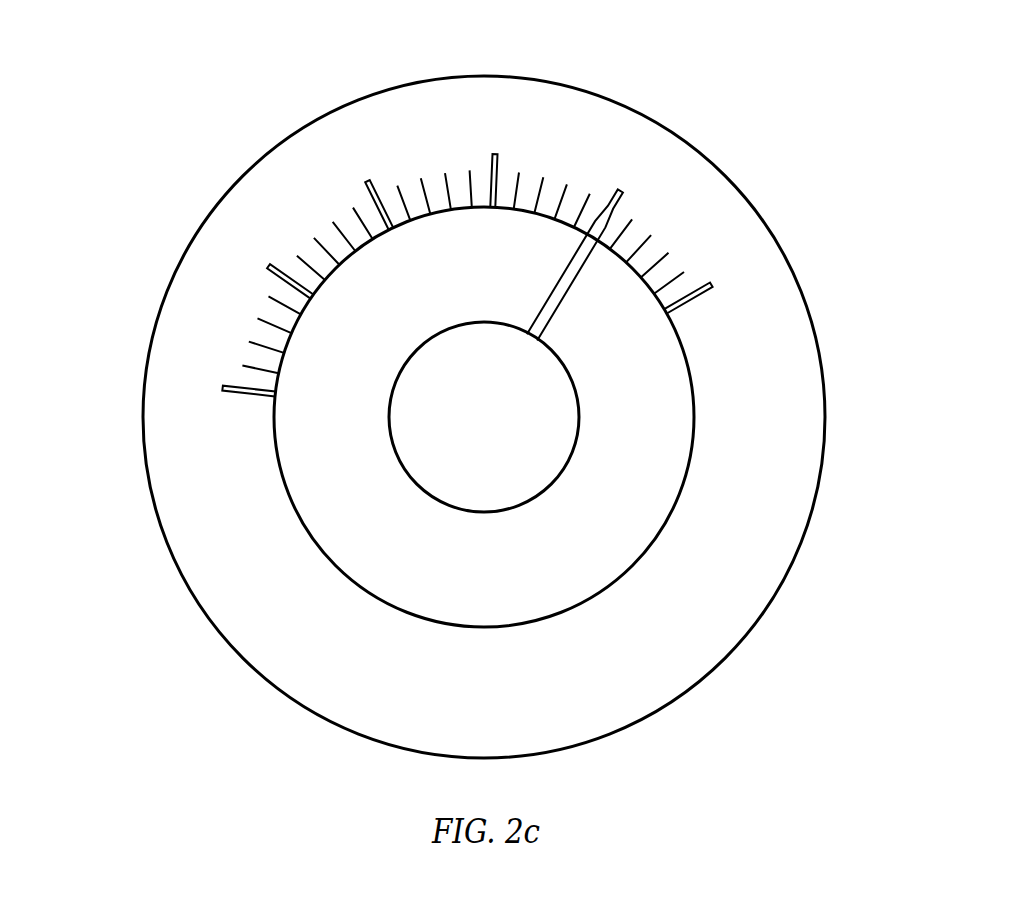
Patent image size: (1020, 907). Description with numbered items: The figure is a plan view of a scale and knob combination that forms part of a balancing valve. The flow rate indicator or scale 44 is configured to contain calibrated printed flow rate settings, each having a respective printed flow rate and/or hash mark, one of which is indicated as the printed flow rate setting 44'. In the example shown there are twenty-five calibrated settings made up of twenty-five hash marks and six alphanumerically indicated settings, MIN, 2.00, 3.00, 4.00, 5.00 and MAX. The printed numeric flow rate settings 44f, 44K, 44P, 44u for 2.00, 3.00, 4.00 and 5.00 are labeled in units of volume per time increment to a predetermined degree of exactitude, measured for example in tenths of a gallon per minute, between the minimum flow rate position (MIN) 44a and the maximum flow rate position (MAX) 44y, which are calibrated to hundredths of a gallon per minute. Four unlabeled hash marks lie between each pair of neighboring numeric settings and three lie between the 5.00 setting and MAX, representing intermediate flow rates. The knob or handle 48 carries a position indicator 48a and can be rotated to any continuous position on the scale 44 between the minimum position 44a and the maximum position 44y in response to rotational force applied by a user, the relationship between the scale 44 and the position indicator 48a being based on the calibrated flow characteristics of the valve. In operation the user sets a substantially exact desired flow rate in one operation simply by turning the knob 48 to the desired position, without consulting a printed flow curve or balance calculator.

The flow rate indicator or scale 44 is at (484, 417).
The printed flow rate setting 44' is at (395, 159).
The printed numeric flow rate setting (3.00) 44K is at (502, 93).
The printed numeric flow rate setting (4.00) 44P is at (343, 128).
The printed numeric flow rate setting (5.00) 44u is at (227, 233).
The maximum flow rate position (MAX) 44y is at (172, 385).
The minimum flow rate position (MIN) 44a is at (767, 269).
The printed numeric flow rate setting (2.00) 44f is at (657, 148).
The knob or handle 48 is at (337, 537).
The position indicator 48a is at (587, 252).